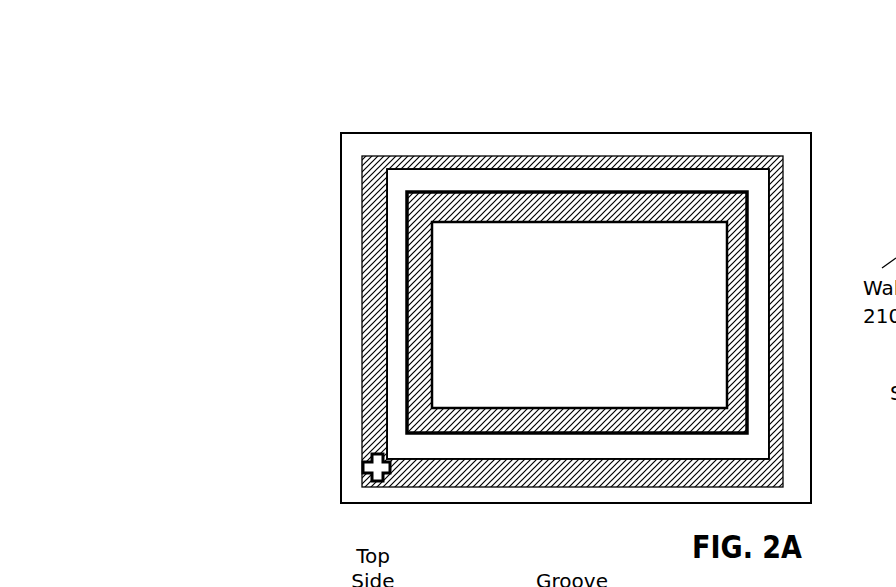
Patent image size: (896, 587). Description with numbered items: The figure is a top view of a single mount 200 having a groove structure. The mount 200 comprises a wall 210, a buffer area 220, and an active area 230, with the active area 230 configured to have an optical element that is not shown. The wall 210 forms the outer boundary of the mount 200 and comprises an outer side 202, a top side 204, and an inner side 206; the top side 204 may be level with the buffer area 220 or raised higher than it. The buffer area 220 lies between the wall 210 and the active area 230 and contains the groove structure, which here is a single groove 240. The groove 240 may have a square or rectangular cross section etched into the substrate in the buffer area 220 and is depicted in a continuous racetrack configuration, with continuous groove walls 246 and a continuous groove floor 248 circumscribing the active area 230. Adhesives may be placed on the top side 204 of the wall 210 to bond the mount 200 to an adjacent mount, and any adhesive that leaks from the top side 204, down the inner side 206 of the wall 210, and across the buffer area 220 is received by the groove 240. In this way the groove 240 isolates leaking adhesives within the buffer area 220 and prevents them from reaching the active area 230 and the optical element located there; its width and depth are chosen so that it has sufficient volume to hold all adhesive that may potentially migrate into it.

The mount 200 is at (536, 271).
The outer side 202 is at (418, 122).
The top side 204 is at (501, 145).
The inner side 206 is at (361, 397).
The wall 210 is at (352, 274).
The buffer area 220 is at (360, 225).
The active area 230 is at (483, 348).
The groove 240 is at (641, 248).
The groove walls 246 is at (571, 181).
The groove floor 248 is at (578, 250).